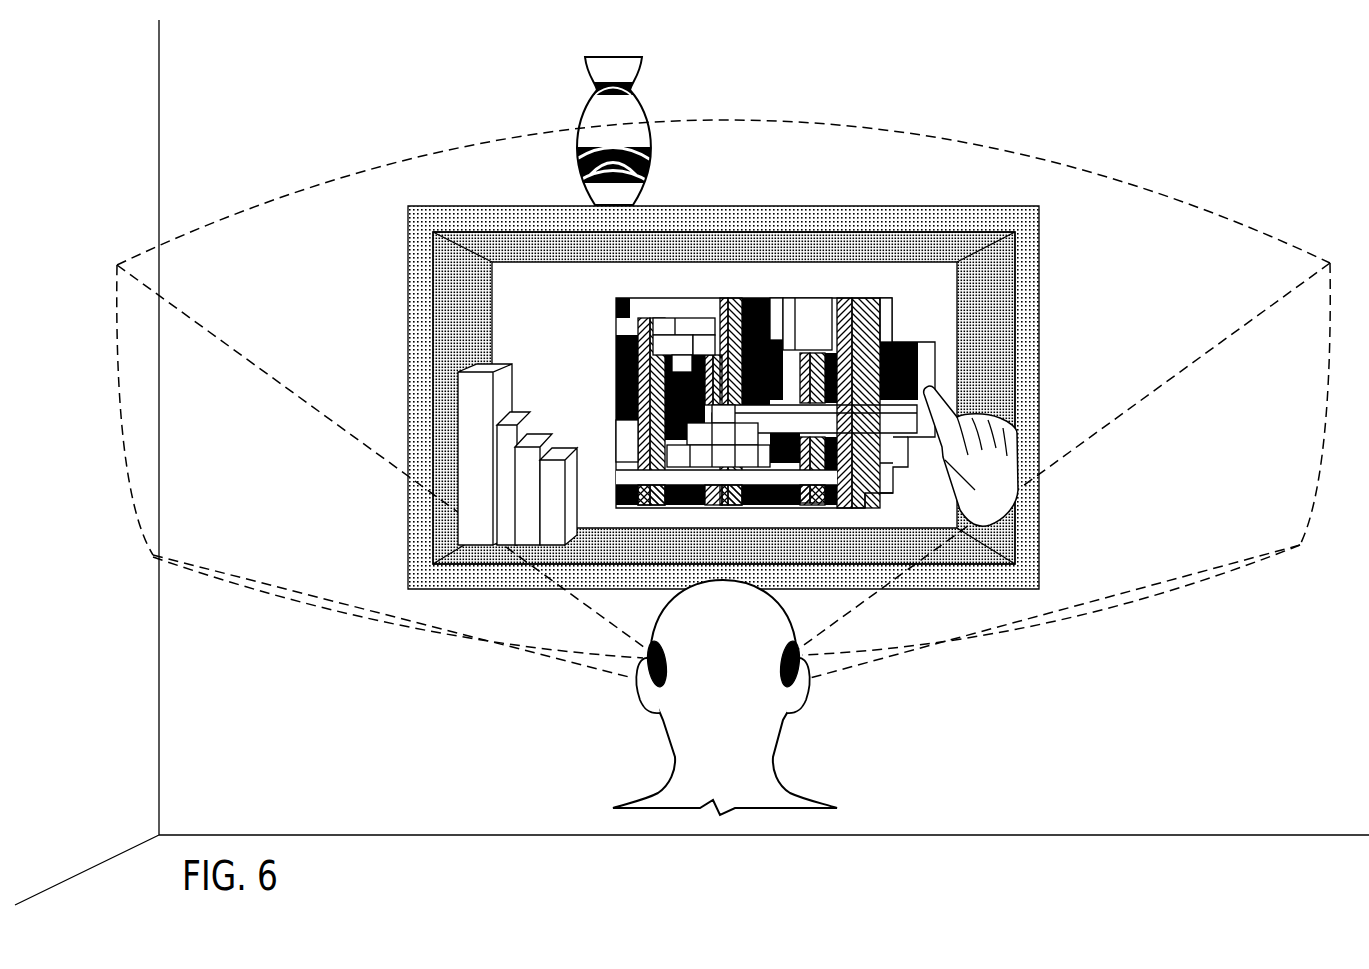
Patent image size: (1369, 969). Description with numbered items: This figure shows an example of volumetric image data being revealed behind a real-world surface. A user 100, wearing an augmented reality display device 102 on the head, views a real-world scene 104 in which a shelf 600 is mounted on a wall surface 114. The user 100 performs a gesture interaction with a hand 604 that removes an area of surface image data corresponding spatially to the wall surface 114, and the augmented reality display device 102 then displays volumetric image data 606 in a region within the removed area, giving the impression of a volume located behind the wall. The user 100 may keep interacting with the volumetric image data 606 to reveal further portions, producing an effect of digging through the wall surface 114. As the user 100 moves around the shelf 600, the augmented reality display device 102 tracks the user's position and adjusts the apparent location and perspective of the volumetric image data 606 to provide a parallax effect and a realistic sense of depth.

The user 100 is at (740, 672).
The augmented reality display device 102 is at (652, 708).
The real-world scene 104 is at (1142, 112).
The wall surface 114 is at (570, 350).
The shelf 600 is at (870, 206).
The hand 604 is at (998, 491).
The volumetric image data 606 is at (817, 319).